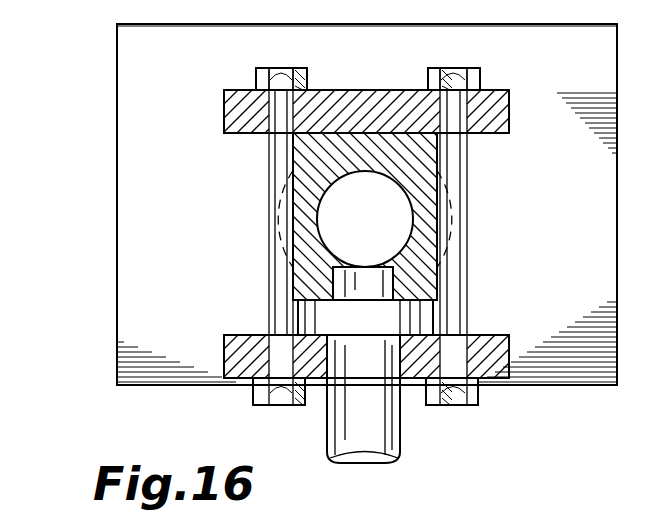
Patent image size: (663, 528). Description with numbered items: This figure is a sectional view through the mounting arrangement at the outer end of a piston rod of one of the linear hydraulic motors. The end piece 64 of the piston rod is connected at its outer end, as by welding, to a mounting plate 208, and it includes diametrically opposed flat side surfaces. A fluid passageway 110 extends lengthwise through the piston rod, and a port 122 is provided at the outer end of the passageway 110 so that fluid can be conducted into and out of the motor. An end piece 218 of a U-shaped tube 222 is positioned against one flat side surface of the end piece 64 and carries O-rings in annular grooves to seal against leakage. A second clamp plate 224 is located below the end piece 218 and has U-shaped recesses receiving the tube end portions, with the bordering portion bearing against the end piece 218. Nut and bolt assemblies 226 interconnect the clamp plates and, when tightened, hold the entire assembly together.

The mounting plate 208 is at (125, 240).
The nut and bolt assemblies 226 is at (273, 68).
The end piece 64 is at (420, 180).
The passageway 110 is at (390, 228).
The port 122 is at (352, 277).
The end piece 218 is at (407, 322).
The U-shaped tube 222 is at (390, 432).
The second clamp plate 224 is at (235, 376).